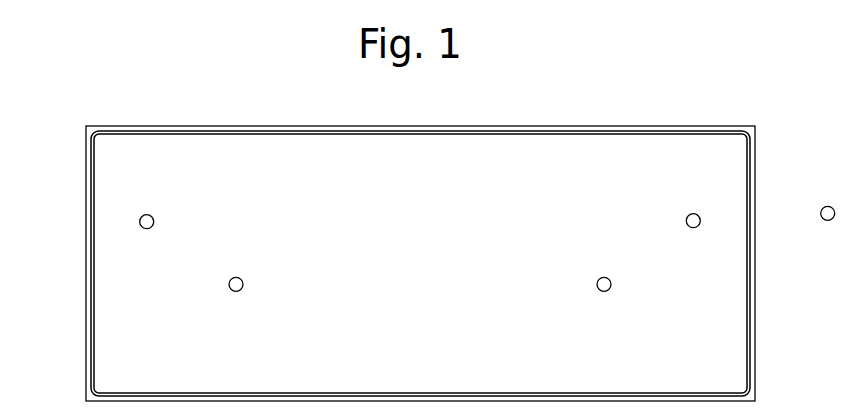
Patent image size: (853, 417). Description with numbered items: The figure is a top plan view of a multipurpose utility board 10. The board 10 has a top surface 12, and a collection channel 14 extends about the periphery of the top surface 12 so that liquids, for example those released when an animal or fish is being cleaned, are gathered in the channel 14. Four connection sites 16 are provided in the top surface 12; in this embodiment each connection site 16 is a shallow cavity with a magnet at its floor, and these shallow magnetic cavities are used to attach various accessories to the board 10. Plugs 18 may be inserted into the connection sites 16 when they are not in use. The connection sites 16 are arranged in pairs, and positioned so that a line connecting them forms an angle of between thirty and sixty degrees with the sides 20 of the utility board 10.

The utility board 10 is at (640, 92).
The top surface 12 is at (411, 242).
The collection channel 14 is at (253, 132).
The connection sites 16 is at (232, 277).
The plugs 18 is at (829, 200).
The sides 20 is at (85, 262).